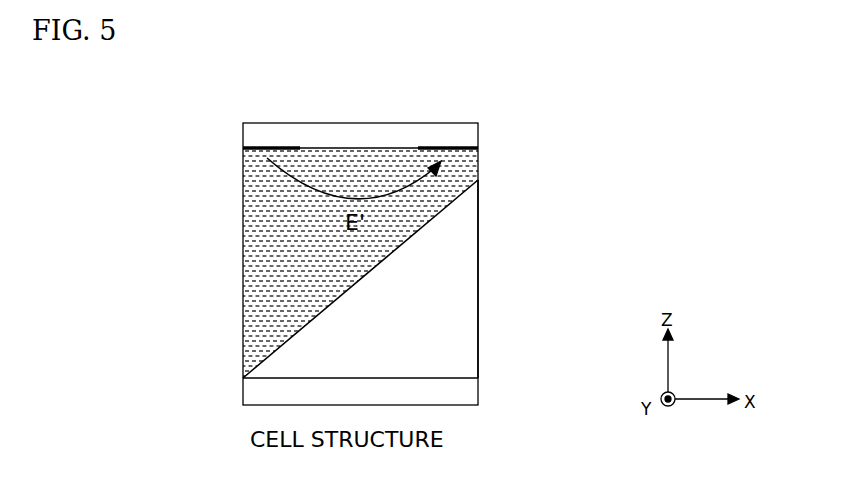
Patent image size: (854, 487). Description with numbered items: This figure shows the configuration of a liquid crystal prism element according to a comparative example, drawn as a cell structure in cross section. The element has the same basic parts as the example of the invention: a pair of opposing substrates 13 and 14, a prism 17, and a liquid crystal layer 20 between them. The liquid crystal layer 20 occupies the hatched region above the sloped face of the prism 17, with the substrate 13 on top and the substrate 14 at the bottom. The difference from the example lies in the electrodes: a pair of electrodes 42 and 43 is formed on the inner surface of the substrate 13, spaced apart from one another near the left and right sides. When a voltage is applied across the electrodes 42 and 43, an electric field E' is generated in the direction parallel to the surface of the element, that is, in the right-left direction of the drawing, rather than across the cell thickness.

The substrate 13 is at (478, 127).
The substrate 14 is at (478, 395).
The prism 17 is at (478, 297).
The liquid crystal layer 20 is at (478, 162).
The electrode 42 is at (275, 147).
The electrode 43 is at (440, 147).